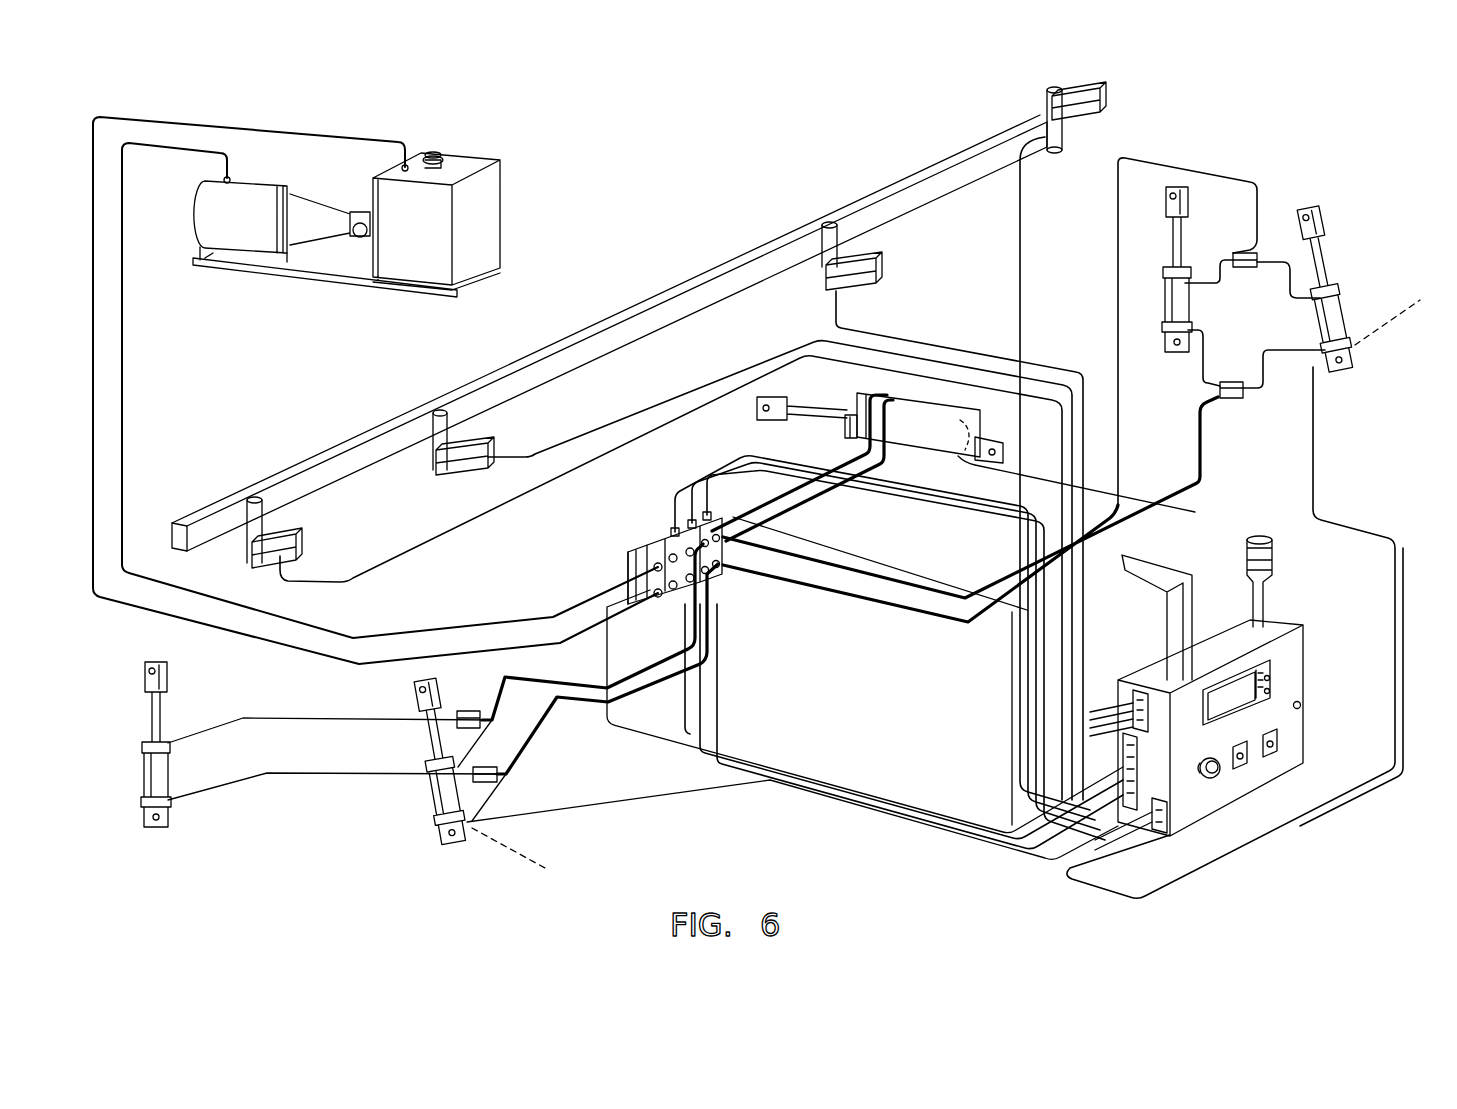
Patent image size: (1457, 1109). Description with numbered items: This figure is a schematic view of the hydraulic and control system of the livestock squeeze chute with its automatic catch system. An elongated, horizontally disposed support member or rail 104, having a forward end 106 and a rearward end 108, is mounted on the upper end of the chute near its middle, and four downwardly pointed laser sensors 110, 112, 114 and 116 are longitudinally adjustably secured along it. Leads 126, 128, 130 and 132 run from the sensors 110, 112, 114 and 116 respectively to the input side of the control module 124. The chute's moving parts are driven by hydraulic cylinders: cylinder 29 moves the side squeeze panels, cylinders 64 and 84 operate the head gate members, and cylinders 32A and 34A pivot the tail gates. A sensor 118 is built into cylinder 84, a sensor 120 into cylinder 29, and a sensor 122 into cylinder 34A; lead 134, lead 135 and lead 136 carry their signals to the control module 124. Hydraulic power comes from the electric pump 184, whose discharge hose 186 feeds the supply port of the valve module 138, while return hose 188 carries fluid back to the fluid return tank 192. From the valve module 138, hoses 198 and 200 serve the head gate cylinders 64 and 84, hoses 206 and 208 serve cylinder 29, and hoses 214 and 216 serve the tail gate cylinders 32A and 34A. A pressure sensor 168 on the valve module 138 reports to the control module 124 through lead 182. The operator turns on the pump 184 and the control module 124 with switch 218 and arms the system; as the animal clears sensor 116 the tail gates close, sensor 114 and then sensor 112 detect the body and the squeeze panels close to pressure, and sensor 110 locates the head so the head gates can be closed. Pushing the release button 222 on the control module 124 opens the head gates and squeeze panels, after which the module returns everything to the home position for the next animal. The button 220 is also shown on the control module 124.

The hydraulic cylinder 29 is at (976, 433).
The hydraulic cylinder 32A is at (1167, 300).
The hydraulic cylinder 34A is at (1345, 322).
The hydraulic cylinder 64 is at (148, 772).
The hydraulic cylinder 84 is at (443, 797).
The support member 104 is at (712, 258).
The forward end 106 is at (180, 542).
The rearward end 108 is at (1070, 132).
The laser sensor 110 is at (285, 562).
The laser sensor 112 is at (490, 458).
The laser sensor 114 is at (855, 283).
The laser sensor 116 is at (1077, 113).
The sensor 118 is at (526, 867).
The sensor 120 is at (985, 407).
The sensor 122 is at (1406, 307).
The control module 124 is at (1300, 762).
The lead 126 is at (400, 557).
The lead 128 is at (600, 443).
The lead 130 is at (873, 337).
The lead 132 is at (1018, 275).
The lead 134 is at (550, 820).
The lead 135 is at (1360, 543).
The lead 136 is at (1313, 443).
The valve module 138 is at (618, 563).
The pressure sensor 168 is at (622, 568).
The lead 182 is at (632, 728).
The electric pump 184 is at (253, 240).
The hydraulic fluid discharge line 186 is at (123, 340).
The return line 188 is at (93, 403).
The fluid return tank 192 is at (472, 205).
The hose 198 is at (557, 677).
The hose 200 is at (597, 700).
The hose 206 is at (933, 385).
The hose 208 is at (840, 463).
The hose 214 is at (1197, 163).
The hose 216 is at (1195, 452).
The switch 218 is at (1217, 773).
The button 220 is at (1243, 763).
The release button 222 is at (1282, 747).